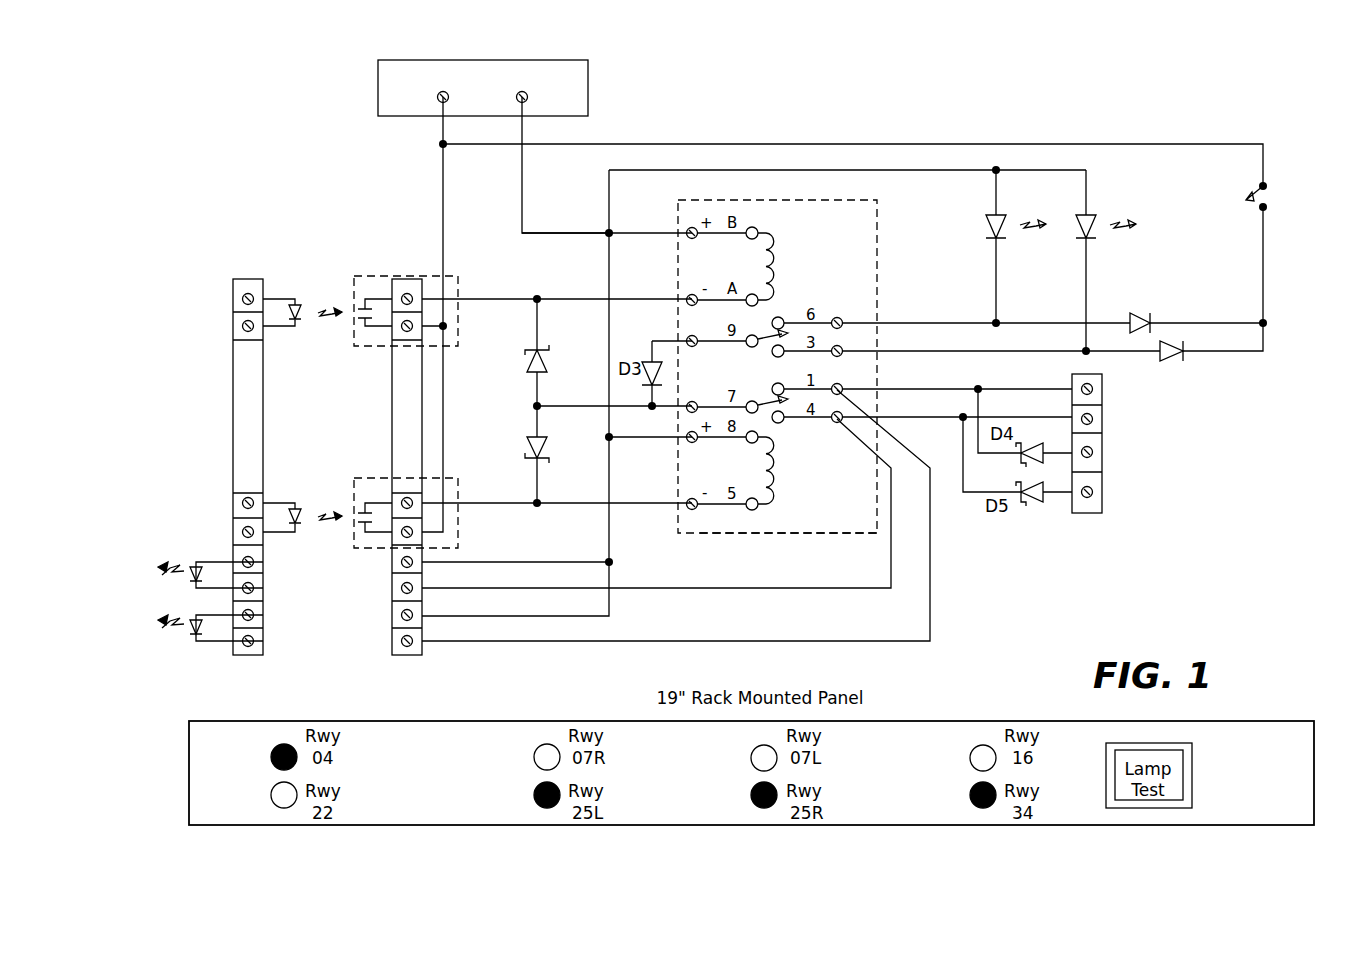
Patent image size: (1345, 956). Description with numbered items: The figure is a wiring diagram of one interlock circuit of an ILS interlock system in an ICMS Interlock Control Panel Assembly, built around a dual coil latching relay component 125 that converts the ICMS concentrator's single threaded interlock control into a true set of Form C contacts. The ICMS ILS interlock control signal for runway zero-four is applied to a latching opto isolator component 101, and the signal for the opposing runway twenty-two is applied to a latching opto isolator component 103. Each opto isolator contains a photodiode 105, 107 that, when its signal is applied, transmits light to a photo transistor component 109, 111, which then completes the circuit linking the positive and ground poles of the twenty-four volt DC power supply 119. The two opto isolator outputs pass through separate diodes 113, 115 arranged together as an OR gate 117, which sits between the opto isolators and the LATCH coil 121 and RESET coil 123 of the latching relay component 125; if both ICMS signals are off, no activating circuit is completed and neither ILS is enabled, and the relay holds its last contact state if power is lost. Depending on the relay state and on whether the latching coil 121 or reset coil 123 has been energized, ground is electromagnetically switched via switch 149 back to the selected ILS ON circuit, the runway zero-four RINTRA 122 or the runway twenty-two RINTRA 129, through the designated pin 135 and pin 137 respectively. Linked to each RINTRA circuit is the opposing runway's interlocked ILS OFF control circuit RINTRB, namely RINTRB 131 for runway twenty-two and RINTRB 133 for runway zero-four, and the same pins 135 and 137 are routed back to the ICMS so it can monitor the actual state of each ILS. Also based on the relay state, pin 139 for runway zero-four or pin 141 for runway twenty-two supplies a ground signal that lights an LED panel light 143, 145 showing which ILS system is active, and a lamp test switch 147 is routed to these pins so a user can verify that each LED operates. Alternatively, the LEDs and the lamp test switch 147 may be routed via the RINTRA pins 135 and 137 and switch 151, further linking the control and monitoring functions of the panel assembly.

The latching opto isolator component 101 is at (222, 313).
The latching opto isolator component 103 is at (222, 533).
The photodiode 105 is at (292, 305).
The photodiode 107 is at (292, 512).
The photo transistor component 109 is at (355, 305).
The photo transistor component 111 is at (358, 510).
The diode 113 is at (525, 356).
The diode 115 is at (552, 448).
The OR gate 117 is at (562, 328).
The +24 VDC power supply 119 is at (590, 90).
The LATCH coil 121 is at (757, 213).
The runway 04 RINTRA 122 is at (1105, 389).
The RESET coil 123 is at (690, 528).
The latching relay component 125 is at (735, 533).
The runway 22 RINTRA 129 is at (1105, 419).
The RINTRB 131 is at (1105, 444).
The RINTRB 133 is at (1105, 500).
The designated pin 135 is at (788, 388).
The designated pin 137 is at (780, 425).
The pin 139 is at (784, 318).
The pin 141 is at (814, 340).
The LED panel light 143 is at (1000, 213).
The LED panel light 145 is at (1093, 210).
The lamp test switch 147 is at (1272, 192).
The switch 149 is at (762, 335).
The switch 151 is at (754, 397).